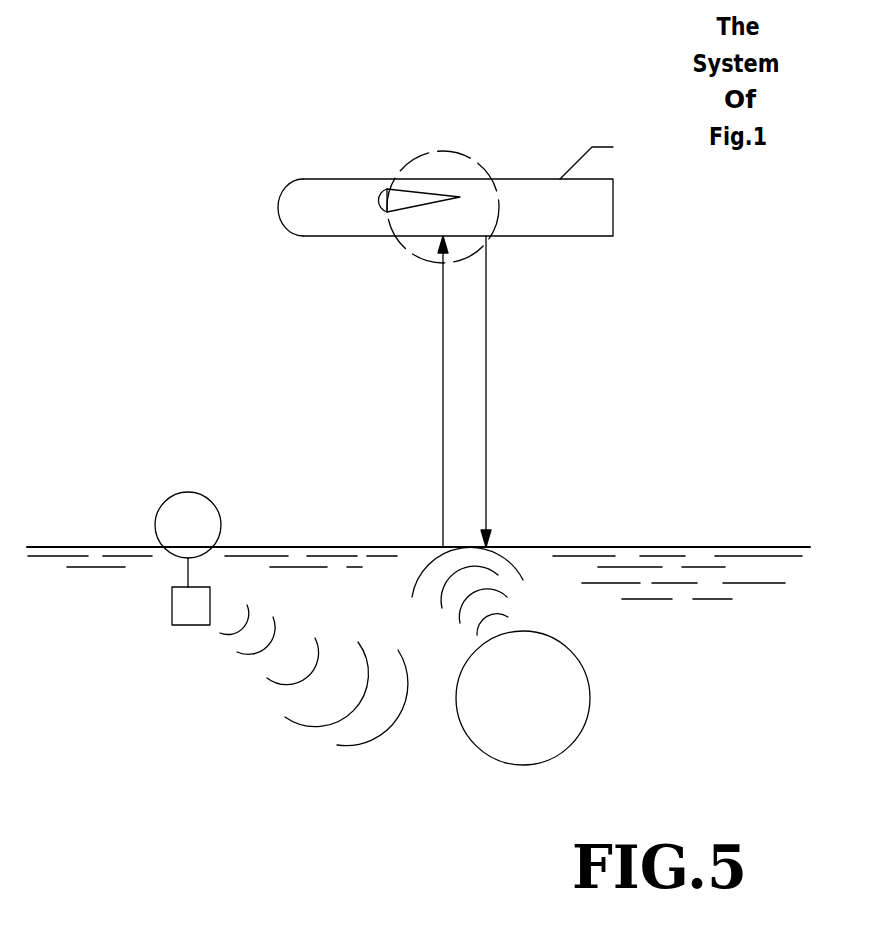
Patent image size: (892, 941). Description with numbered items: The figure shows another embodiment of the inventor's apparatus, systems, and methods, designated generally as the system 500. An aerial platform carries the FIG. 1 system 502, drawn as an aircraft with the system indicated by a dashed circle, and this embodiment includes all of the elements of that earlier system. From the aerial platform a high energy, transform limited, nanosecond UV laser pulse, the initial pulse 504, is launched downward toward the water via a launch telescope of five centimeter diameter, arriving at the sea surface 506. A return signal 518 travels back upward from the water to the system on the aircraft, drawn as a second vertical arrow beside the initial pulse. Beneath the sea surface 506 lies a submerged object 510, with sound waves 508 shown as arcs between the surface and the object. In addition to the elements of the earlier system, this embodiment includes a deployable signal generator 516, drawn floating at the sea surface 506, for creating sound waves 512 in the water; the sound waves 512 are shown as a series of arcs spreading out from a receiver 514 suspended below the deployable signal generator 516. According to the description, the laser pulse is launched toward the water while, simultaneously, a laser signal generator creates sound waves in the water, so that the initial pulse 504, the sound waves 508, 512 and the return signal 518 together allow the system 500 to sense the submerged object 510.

The system 500 is at (255, 112).
The FIG. 1 system 502 is at (462, 155).
The initial pulse 504 is at (486, 370).
The sea surface 506 is at (712, 547).
The sound waves 508 is at (505, 597).
The submerged object 510 is at (553, 718).
The sound waves 512 is at (268, 679).
The receiver 514 is at (172, 610).
The deployable signal generator 516 is at (212, 500).
The return signal 518 is at (444, 326).